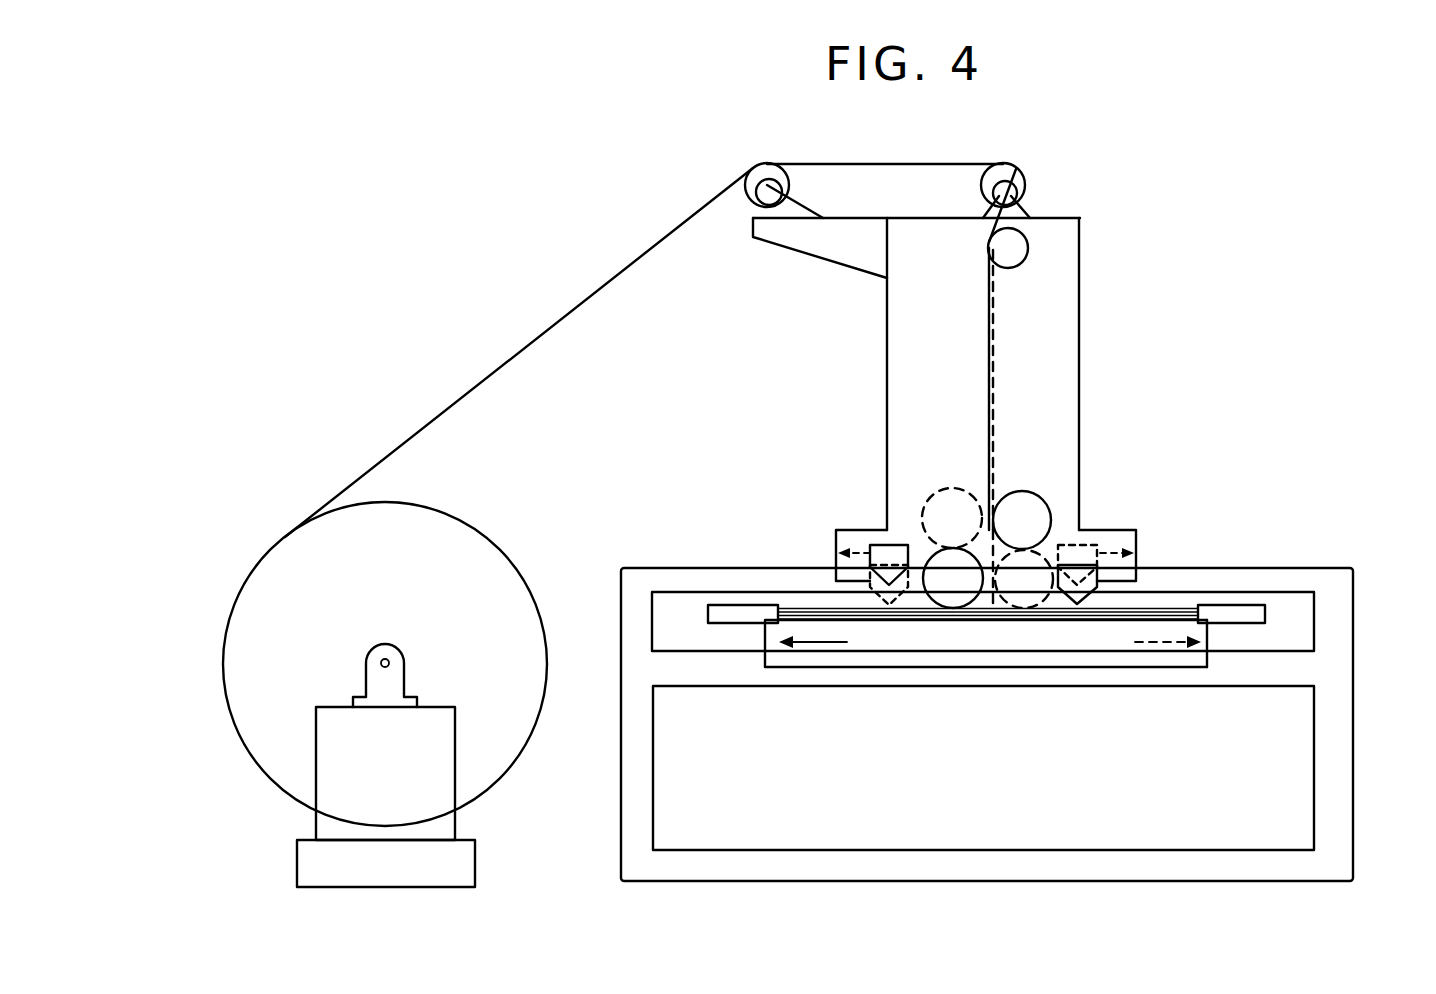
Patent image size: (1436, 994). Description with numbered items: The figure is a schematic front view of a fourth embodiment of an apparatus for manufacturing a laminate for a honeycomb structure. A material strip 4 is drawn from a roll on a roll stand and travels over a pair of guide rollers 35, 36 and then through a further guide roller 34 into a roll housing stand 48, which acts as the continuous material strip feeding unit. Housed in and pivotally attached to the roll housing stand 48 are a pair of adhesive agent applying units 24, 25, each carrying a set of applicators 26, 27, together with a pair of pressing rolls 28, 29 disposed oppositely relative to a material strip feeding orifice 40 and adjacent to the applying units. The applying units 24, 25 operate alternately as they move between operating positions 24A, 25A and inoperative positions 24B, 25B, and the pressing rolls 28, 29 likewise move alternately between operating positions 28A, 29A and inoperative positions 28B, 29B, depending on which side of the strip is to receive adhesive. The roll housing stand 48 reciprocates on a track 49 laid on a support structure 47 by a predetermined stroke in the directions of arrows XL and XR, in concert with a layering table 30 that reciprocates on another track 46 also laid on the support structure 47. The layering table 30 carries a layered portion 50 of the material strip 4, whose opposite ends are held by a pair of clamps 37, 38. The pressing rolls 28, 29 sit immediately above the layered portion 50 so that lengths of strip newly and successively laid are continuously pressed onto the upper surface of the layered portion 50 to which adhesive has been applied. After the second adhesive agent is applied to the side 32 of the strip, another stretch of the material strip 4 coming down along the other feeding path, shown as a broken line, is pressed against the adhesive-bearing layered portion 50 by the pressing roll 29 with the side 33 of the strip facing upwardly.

The material strip 4 is at (620, 273).
The adhesive agent applying unit 24 is at (1107, 575).
The operating position 24A is at (1087, 608).
The inoperative position 24B is at (1092, 543).
The adhesive agent applying unit 25 is at (860, 571).
The operating position 25A is at (875, 598).
The inoperative position 25B is at (885, 545).
The applicator 26 is at (1078, 608).
The applicator 27 is at (889, 608).
The pressing roll 28 is at (935, 548).
The operating position 28A is at (953, 608).
The inoperative position 28B is at (923, 497).
The pressing roll 29 is at (1040, 517).
The operating position 29A is at (1024, 612).
The inoperative position 29B is at (1033, 490).
The layering table 30 is at (1008, 645).
The side 32 is at (978, 362).
The side 33 is at (1007, 373).
The guide roller 34 is at (1027, 238).
The guide roller 35 is at (770, 165).
The guide roller 36 is at (1012, 166).
The clamp 37 is at (1257, 612).
The clamp 38 is at (738, 612).
The material strip feeding orifice 40 is at (985, 598).
The track 46 is at (715, 668).
The support structure 47 is at (1340, 598).
The roll housing stand 48 is at (1068, 447).
The track 49 is at (1233, 578).
The layered portion 50 is at (1167, 606).
The arrow XL is at (817, 644).
The arrow XR is at (1168, 644).